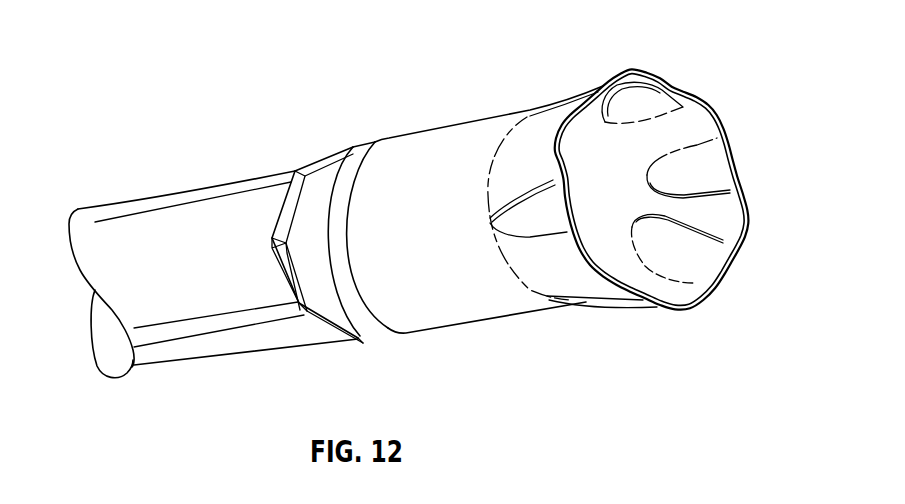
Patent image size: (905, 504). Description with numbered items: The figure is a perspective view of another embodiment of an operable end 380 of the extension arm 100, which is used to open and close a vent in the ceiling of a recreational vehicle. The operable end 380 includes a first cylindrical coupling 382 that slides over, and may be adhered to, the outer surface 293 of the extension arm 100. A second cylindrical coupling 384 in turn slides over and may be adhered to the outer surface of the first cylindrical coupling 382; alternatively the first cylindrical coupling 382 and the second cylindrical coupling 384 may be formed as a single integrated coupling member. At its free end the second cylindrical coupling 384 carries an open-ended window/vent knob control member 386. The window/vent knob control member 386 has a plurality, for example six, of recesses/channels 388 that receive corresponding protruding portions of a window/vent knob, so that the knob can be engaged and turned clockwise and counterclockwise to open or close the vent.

The extension arm 100 is at (213, 258).
The outer surface 293 is at (202, 278).
The operable end 380 is at (631, 184).
The first cylindrical coupling 382 is at (369, 351).
The second cylindrical coupling 384 is at (508, 334).
The window/vent knob control member 386 is at (695, 311).
The recesses/channels 388 is at (570, 156).